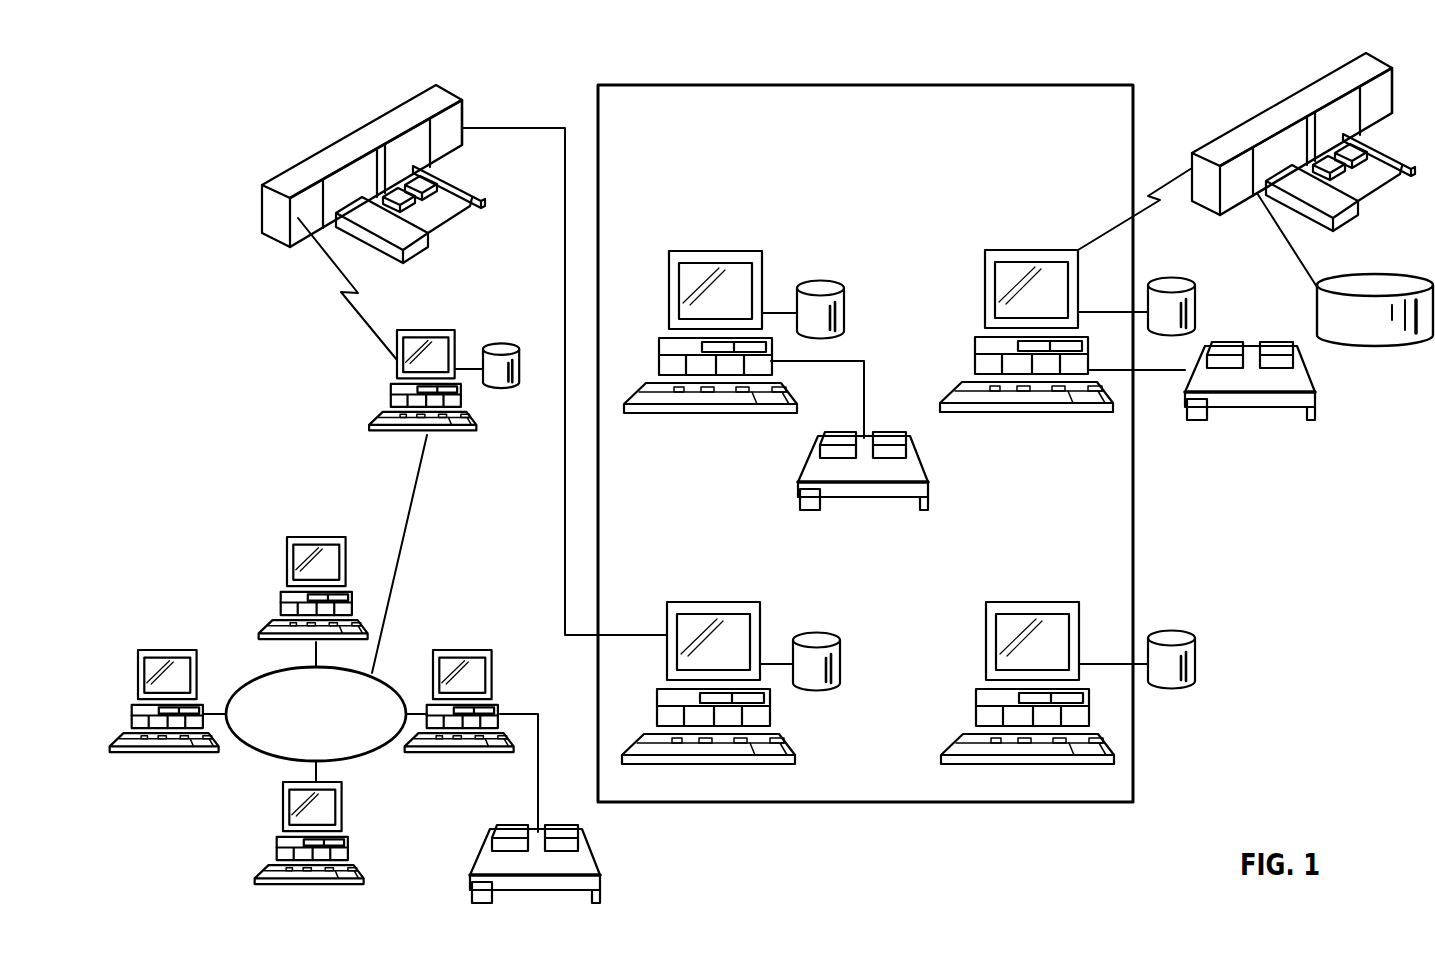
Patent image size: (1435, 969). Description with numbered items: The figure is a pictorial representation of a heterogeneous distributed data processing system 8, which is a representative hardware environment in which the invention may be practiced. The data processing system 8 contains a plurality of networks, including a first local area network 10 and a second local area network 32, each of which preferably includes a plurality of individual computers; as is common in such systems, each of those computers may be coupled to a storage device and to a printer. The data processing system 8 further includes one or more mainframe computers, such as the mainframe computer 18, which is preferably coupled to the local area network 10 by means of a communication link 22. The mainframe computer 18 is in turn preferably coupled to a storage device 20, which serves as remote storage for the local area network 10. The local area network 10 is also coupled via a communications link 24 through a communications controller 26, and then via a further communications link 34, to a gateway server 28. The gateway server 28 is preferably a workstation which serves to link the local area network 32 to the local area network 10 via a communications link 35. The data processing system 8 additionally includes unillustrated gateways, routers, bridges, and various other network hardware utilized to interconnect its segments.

The distributed data processing system 8 is at (586, 89).
The local area network 10 is at (747, 158).
The mainframe computer 18 is at (1214, 148).
The storage device 20 is at (1370, 328).
The communication link 22 is at (1164, 183).
The communications link 24 is at (563, 265).
The communications controller 26 is at (337, 152).
The gateway server 28 is at (438, 330).
The local area network 32 is at (270, 757).
The communications link 34 is at (368, 326).
The communications link 35 is at (410, 513).